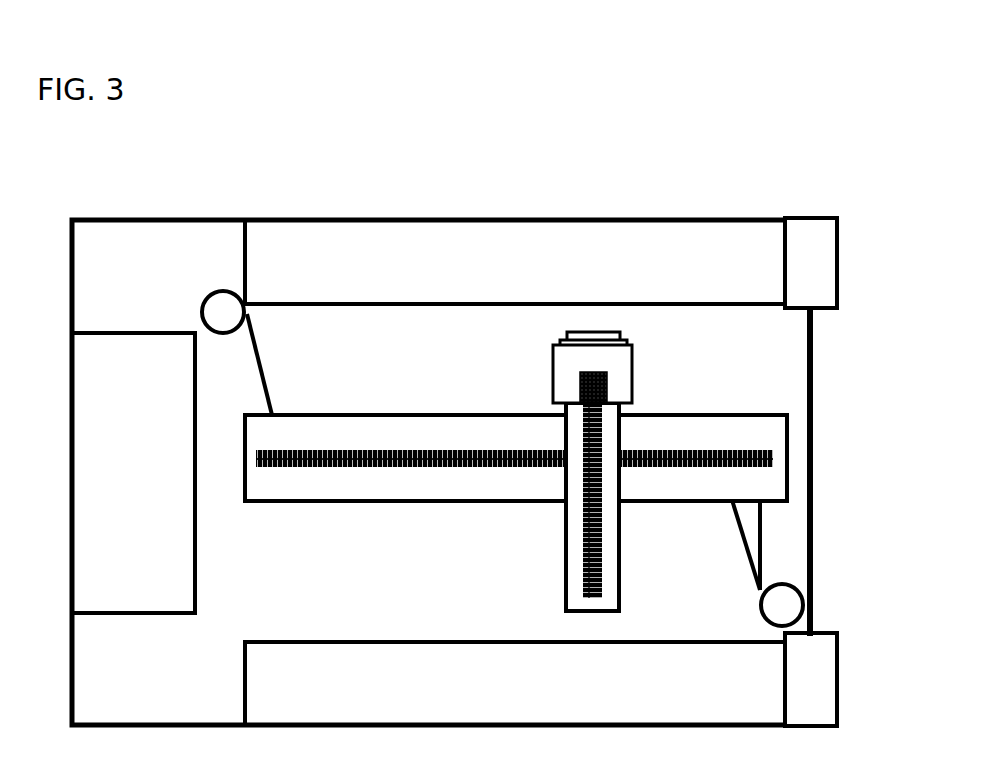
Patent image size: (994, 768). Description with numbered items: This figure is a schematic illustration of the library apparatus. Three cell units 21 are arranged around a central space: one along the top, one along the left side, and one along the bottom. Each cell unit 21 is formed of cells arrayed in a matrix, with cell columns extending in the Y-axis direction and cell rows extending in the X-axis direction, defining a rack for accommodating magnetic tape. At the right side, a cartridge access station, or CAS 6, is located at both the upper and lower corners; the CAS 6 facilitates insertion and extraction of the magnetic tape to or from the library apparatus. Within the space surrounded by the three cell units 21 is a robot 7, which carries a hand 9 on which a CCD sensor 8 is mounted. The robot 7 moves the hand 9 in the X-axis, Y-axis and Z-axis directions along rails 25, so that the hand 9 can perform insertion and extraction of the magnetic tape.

The cell unit 21 is at (408, 235).
The cartridge access station 6 is at (839, 248).
The robot 7 is at (338, 507).
The CCD sensor 8 is at (605, 386).
The hand 9 is at (579, 358).
The rails 25 is at (683, 469).